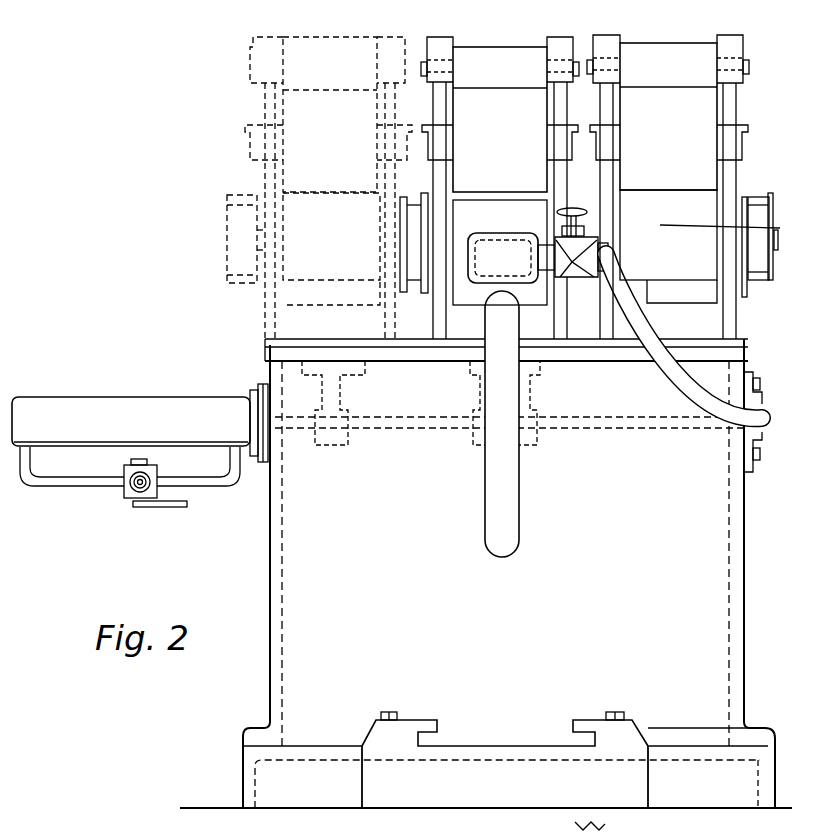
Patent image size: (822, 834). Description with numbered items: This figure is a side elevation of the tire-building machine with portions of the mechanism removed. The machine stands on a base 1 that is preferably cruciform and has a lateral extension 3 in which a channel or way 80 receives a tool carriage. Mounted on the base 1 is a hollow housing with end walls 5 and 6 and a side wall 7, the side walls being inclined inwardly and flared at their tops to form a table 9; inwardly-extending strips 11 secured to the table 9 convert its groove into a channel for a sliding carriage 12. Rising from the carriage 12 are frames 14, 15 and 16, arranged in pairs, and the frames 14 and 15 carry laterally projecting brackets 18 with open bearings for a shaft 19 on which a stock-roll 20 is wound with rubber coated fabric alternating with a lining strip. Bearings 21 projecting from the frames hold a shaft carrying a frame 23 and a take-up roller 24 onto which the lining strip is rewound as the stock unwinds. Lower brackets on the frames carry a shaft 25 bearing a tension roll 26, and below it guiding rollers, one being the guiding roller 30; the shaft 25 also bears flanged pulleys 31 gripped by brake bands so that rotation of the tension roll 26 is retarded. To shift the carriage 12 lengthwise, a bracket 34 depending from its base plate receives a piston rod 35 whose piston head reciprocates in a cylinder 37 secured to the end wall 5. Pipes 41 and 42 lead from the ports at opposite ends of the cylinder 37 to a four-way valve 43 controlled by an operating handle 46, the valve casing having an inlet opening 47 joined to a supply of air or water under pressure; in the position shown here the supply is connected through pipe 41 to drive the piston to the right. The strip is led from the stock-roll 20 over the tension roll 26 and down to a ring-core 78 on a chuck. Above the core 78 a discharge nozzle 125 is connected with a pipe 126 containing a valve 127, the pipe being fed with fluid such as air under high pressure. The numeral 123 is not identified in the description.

The base 1 is at (711, 573).
The lateral extension 3 is at (501, 576).
The end wall 5 is at (276, 483).
The end wall 6 is at (735, 497).
The side wall 7 is at (506, 423).
The table 9 is at (604, 362).
The inwardly-extending strip 11 is at (740, 340).
The carriage 12 is at (762, 396).
The frame 14 is at (448, 45).
The frame 15 is at (540, 45).
The frame 16 is at (612, 45).
The laterally projecting bracket 18 is at (740, 120).
The shaft 19 is at (742, 140).
The stock-roll 20 is at (668, 116).
The bearing 21 is at (718, 68).
The frame 23 is at (691, 73).
The take-up roller 24 is at (725, 234).
The shaft 25 is at (708, 233).
The tension roll 26 is at (676, 213).
The guiding roller 30 is at (668, 247).
The flanged pulley 31 is at (758, 280).
The bracket 34 is at (518, 393).
The piston rod 35 is at (436, 420).
The cylinder 37 is at (140, 423).
The pipe 41 is at (75, 487).
The pipe 42 is at (212, 503).
The four-way valve 43 is at (158, 472).
The operating handle 46 is at (160, 516).
The inlet opening 47 is at (136, 488).
The ring-core 78 is at (522, 472).
The channel or way 80 is at (600, 692).
The lug 123 is at (690, 195).
The discharge nozzle 125 is at (511, 258).
The pipe 126 is at (668, 385).
The valve 127 is at (578, 280).